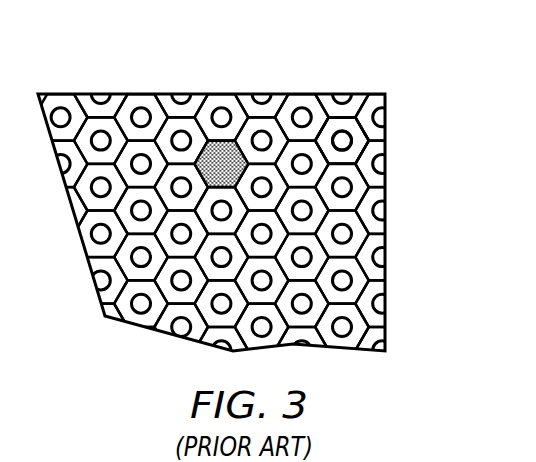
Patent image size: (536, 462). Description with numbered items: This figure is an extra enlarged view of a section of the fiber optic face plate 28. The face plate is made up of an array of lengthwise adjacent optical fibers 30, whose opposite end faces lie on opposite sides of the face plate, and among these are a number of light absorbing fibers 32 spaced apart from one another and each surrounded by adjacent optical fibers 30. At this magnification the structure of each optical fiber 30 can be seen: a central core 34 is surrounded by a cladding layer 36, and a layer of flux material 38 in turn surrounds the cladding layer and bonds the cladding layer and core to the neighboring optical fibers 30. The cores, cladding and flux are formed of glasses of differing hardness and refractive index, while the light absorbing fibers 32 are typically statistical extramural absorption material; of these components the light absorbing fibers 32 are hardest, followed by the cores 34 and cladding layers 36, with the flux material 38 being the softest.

The fiber optic face plate 28 is at (211, 179).
The optical fiber 30 is at (221, 218).
The light absorbing fiber 32 is at (210, 112).
The central core 34 is at (382, 95).
The cladding layer 36 is at (389, 148).
The layer of flux material 38 is at (388, 134).